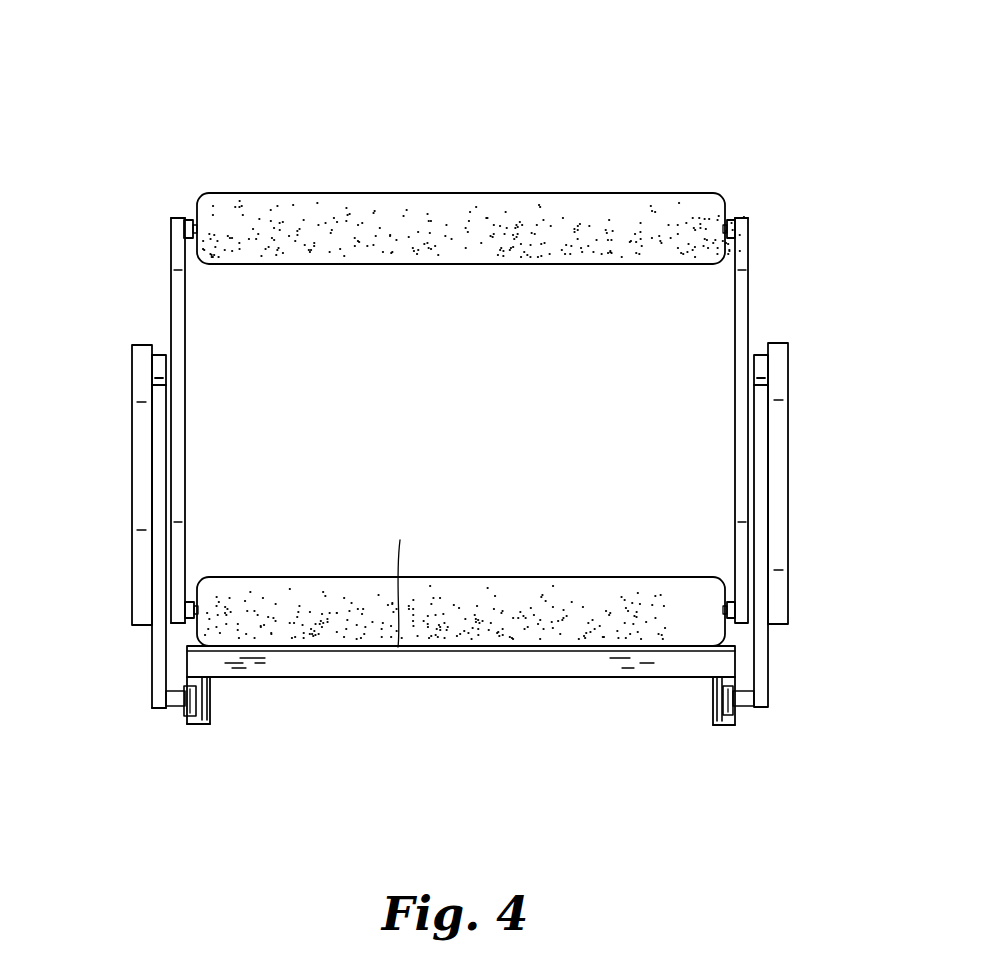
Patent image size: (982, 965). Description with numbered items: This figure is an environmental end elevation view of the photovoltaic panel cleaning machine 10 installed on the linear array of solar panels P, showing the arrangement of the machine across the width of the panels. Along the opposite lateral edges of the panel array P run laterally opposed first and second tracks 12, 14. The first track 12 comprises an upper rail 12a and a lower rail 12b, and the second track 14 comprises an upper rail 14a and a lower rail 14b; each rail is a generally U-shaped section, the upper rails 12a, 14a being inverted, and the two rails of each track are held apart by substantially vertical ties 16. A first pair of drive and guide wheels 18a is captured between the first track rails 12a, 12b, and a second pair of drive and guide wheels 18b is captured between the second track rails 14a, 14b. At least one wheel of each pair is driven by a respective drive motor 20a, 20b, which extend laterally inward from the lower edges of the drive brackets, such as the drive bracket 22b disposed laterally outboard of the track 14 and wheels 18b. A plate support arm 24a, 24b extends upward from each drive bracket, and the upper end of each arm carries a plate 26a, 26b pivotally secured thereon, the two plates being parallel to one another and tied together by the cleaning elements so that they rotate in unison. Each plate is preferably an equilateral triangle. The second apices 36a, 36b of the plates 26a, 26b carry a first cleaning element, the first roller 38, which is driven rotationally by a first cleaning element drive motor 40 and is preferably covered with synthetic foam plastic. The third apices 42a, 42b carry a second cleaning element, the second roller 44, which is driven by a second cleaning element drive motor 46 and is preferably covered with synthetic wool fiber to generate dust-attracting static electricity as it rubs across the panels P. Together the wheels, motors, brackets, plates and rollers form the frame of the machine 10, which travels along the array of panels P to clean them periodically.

The panel cleaning machine 10 is at (138, 82).
The first track 12 is at (757, 750).
The upper rail 12a is at (737, 680).
The lower rail 12b is at (735, 724).
The second track 14 is at (145, 763).
The upper rail 14a is at (153, 687).
The lower rail 14b is at (188, 728).
The substantially vertical ties 16 is at (210, 707).
The first pair of drive and guide wheels 18a is at (733, 705).
The second pair of drive and guide wheels 18b is at (184, 708).
The drive motor 20a is at (754, 698).
The drive motor 20b is at (166, 700).
The drive bracket 22b is at (114, 537).
The plate support arm 24a is at (788, 460).
The plate support arm 24b is at (133, 485).
The first plate 26a is at (722, 388).
The second plate 26b is at (167, 417).
The second apex 36a is at (170, 218).
The second apex 36b is at (748, 218).
The first roller 38 is at (448, 192).
The first cleaning element drive motor 40 is at (188, 218).
The third apex 42a is at (170, 630).
The third apex 42b is at (742, 638).
The second roller 44 is at (475, 577).
The second cleaning element drive motor 46 is at (192, 595).
The photovoltaic panels P is at (405, 580).